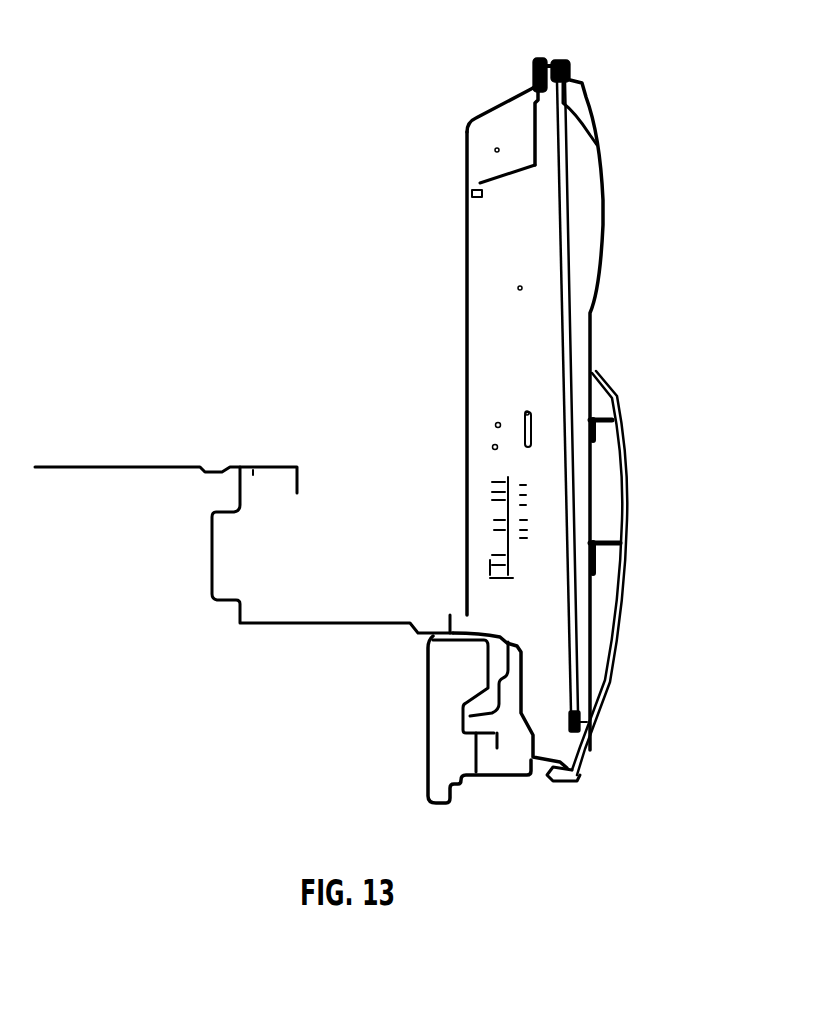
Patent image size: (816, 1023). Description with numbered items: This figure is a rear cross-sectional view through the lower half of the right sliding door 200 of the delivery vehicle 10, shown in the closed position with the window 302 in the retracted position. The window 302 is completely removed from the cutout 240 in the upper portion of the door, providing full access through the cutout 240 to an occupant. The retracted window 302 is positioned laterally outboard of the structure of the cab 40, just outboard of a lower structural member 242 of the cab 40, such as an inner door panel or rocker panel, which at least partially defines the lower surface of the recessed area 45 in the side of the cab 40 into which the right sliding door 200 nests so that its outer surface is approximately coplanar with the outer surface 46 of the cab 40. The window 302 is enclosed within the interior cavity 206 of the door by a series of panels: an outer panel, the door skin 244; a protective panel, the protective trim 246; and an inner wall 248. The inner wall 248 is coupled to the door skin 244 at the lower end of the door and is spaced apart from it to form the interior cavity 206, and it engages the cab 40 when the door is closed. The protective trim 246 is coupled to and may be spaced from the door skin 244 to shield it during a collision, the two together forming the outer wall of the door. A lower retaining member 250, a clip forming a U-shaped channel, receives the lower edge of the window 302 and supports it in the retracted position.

The delivery vehicle 10 is at (240, 42).
The cab 40 is at (205, 434).
The recessed area 45 is at (458, 606).
The outer surface of the cab 46 is at (520, 647).
The right sliding door 200 is at (606, 110).
The interior cavity 206 is at (525, 335).
The cutout 240 is at (563, 59).
The lower structural member 242 is at (498, 644).
The door skin 244 is at (603, 240).
The protective trim 246 is at (626, 455).
The inner wall 248 is at (466, 416).
The lower retaining member 250 is at (603, 732).
The window 302 is at (575, 208).